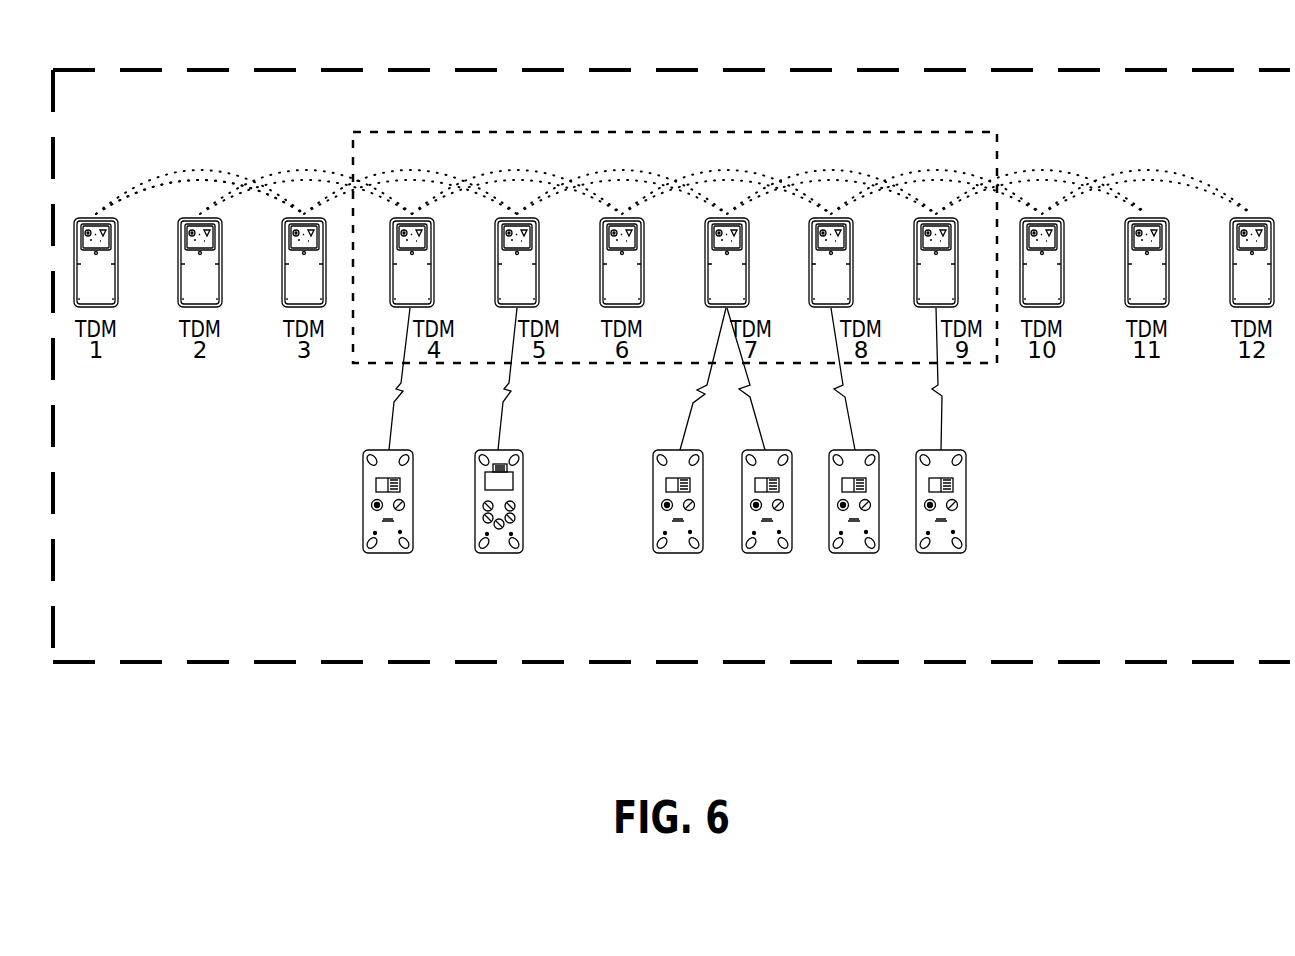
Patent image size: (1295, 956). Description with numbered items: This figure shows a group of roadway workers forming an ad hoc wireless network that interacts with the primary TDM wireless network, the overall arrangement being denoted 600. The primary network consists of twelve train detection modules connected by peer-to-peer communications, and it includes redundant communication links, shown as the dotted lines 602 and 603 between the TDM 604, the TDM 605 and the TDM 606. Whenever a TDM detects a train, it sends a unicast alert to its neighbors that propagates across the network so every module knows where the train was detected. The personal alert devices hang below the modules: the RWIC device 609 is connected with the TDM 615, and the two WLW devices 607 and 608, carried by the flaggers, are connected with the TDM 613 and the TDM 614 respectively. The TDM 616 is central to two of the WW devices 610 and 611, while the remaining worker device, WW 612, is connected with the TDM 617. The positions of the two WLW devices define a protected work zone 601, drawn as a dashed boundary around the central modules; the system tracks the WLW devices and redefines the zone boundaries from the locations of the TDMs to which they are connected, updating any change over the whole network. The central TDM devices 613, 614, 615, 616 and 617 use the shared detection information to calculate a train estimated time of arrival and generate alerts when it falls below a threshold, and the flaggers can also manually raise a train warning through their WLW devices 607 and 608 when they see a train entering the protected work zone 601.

The test and measurement system 600 is at (1225, 70).
The protected work zone 601 is at (810, 132).
The communication link 602 is at (211, 166).
The communication link 603 is at (143, 196).
The TDM 604 is at (118, 262).
The TDM 605 is at (222, 262).
The TDM 606 is at (286, 262).
The WLW device 607 is at (363, 480).
The WLW device 608 is at (966, 480).
The RWIC device 609 is at (475, 480).
The WW device 610 is at (653, 480).
The WW device 611 is at (745, 553).
The WW device 612 is at (832, 553).
The TDM 613 is at (434, 262).
The TDM 614 is at (914, 255).
The TDM 615 is at (539, 262).
The TDM 616 is at (749, 262).
The TDM 617 is at (853, 262).